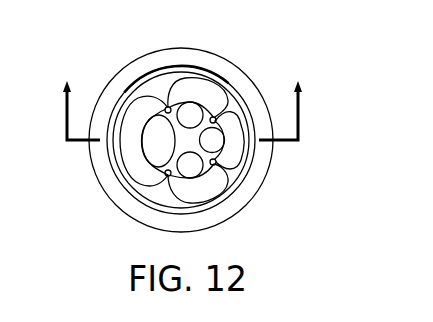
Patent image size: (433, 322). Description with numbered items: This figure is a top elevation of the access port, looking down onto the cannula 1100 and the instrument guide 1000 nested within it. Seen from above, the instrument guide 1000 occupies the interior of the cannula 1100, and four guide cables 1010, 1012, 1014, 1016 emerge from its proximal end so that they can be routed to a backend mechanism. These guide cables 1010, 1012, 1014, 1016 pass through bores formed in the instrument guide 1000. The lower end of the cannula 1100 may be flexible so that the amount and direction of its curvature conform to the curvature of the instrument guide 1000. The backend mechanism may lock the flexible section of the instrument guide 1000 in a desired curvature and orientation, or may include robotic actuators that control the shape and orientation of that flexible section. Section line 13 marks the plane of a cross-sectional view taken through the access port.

The cannula 1100 is at (186, 47).
The instrument guide 1000 is at (219, 68).
The guide cable 1010 is at (166, 175).
The guide cable 1012 is at (215, 163).
The guide cable 1014 is at (166, 108).
The guide cable 1016 is at (215, 118).
The section line 13- 13 is at (183, 103).